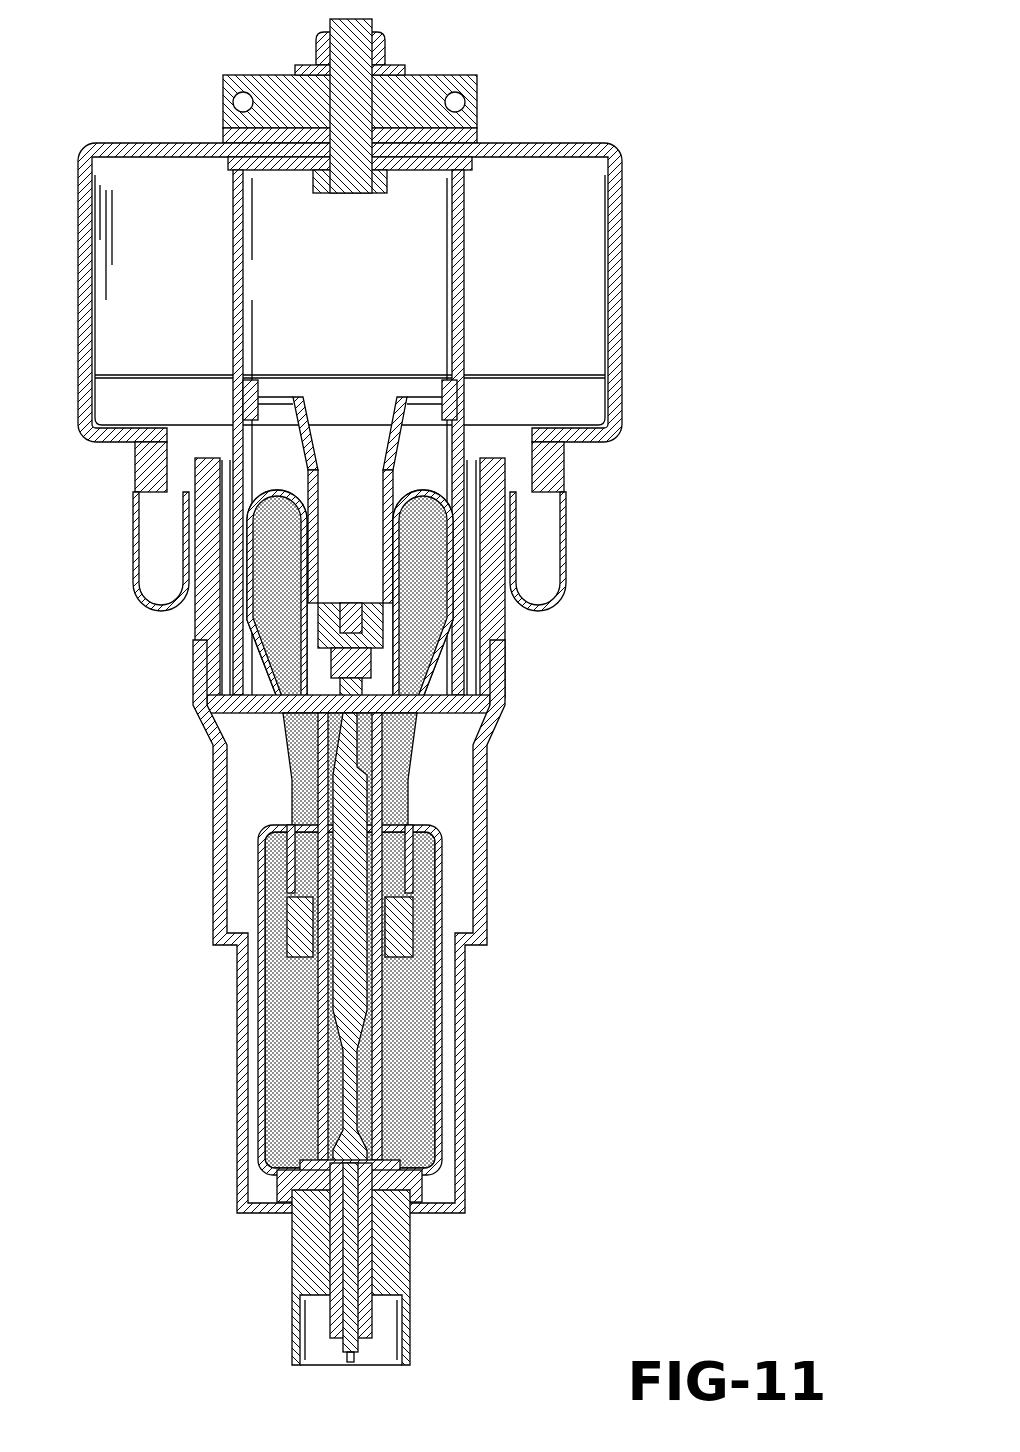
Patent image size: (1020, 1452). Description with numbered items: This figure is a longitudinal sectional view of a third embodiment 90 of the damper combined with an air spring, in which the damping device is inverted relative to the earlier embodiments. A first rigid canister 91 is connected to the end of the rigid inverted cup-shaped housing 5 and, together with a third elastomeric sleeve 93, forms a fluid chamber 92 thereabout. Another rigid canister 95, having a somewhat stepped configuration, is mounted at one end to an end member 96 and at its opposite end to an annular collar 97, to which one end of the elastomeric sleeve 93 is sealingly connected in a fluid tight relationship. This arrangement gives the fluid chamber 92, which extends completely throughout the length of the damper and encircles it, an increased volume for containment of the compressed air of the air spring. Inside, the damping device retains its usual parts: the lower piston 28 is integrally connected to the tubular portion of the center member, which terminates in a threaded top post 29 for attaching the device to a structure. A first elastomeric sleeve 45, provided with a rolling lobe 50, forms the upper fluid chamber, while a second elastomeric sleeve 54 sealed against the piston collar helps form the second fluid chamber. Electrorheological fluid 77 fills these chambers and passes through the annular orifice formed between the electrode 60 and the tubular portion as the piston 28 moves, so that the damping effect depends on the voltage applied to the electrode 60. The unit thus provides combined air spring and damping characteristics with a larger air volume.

The housing 5 is at (226, 271).
The fluid chamber 92 is at (565, 252).
The first rigid canister 91 is at (622, 322).
The lower piston 28 is at (398, 476).
The second elastomeric sleeve 54 is at (245, 578).
The third elastomeric sleeve 93 is at (565, 531).
The annular collar 97 is at (492, 600).
The third embodiment 90 is at (522, 755).
The rolling lobe 50 is at (440, 830).
The rigid canister 95 is at (466, 990).
The electrode 60 is at (338, 997).
The first elastomeric sleeve 45 is at (443, 1065).
The fluid 77 is at (415, 1107).
The end member 96 is at (318, 1255).
The top post 29 is at (366, 1325).